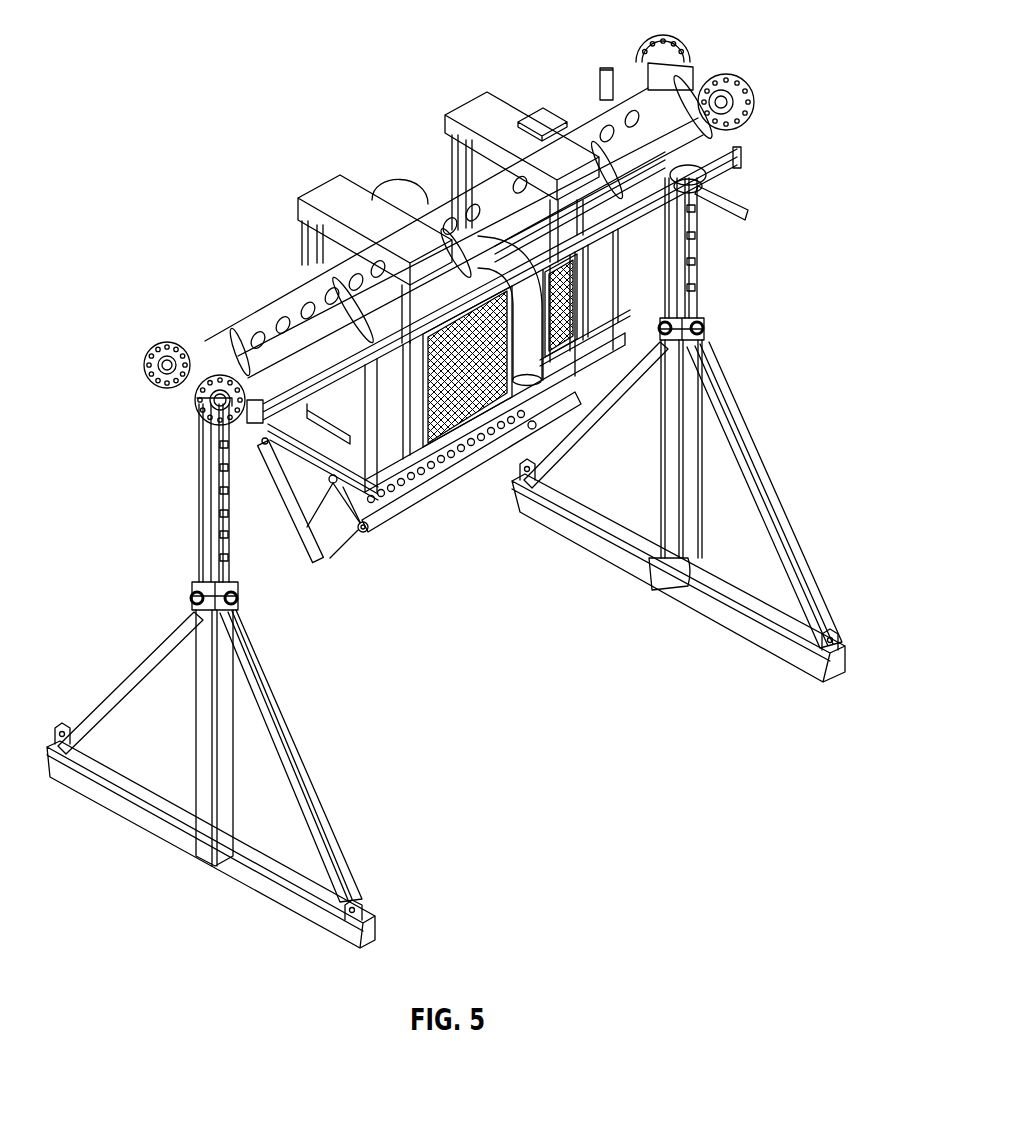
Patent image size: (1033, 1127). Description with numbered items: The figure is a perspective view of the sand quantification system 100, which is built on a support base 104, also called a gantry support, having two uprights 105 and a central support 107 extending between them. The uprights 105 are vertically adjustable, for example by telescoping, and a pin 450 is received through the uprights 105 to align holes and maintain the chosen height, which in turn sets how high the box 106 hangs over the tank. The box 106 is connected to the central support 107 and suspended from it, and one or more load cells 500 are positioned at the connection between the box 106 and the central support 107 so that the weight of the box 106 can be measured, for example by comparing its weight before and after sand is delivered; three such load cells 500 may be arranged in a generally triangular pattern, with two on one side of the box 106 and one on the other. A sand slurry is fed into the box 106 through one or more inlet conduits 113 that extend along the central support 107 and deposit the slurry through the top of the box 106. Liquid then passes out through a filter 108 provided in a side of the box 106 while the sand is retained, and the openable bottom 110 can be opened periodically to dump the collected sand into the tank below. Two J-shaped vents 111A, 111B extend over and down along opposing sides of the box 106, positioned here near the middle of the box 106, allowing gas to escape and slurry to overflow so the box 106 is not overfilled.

The sand quantification system 100 is at (128, 49).
The support base 104 is at (140, 808).
The uprights 105 is at (202, 518).
The box 106 is at (312, 530).
The central support 107 is at (292, 290).
The filter 108 is at (558, 466).
The openable bottom 110 is at (370, 540).
The vent 111A is at (570, 422).
The vent 111B is at (383, 176).
The inlet conduits 113 is at (282, 360).
The pin 450 is at (240, 604).
The load cells 500 is at (714, 190).